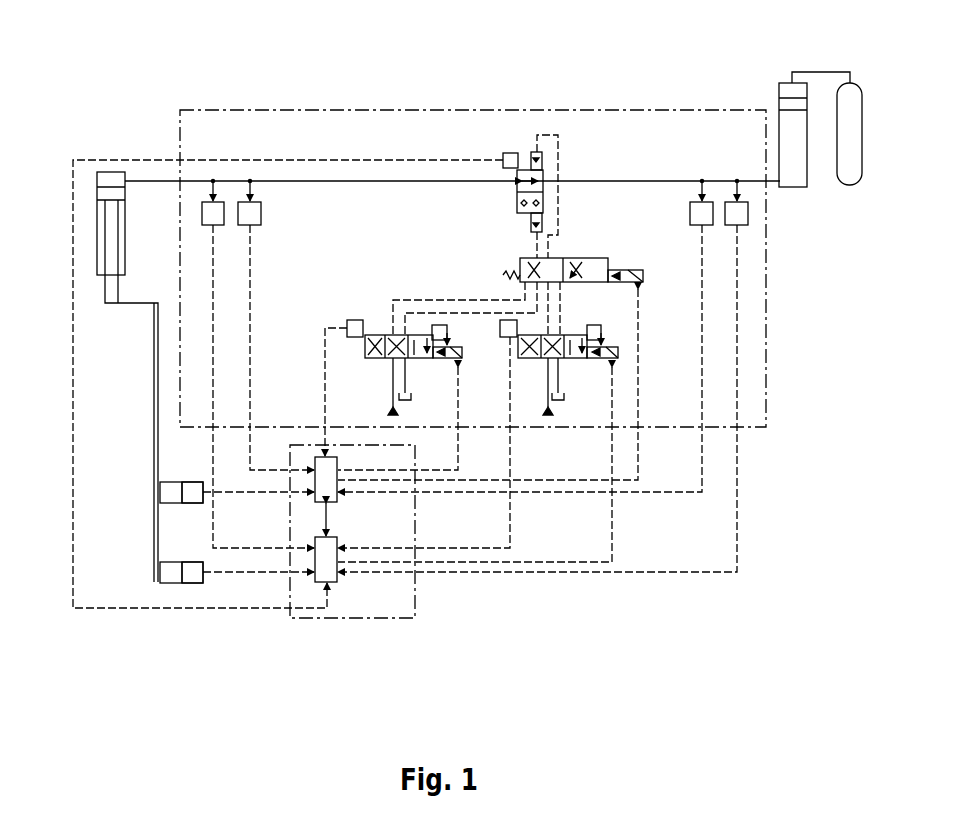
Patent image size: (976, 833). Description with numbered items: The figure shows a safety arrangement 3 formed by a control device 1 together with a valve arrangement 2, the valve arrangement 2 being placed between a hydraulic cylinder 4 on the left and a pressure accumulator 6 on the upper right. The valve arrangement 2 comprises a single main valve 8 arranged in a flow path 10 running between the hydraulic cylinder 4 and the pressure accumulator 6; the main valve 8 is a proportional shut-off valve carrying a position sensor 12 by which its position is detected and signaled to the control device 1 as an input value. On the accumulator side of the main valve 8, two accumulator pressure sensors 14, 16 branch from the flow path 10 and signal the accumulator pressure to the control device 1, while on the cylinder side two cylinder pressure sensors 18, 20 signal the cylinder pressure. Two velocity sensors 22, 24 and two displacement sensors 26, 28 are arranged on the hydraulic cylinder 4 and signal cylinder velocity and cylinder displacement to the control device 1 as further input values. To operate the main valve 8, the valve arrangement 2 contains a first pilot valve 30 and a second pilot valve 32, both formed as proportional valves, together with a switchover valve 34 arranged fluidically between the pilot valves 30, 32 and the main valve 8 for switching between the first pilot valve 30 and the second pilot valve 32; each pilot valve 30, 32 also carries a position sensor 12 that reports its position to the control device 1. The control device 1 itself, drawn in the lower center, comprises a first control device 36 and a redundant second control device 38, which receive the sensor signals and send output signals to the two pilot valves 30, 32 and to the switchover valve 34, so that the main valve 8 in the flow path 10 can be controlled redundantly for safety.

The control device 1 is at (419, 607).
The valve arrangement 2 is at (404, 107).
The safety arrangement 3 is at (573, 609).
The hydraulic cylinder 4 is at (97, 266).
The pressure accumulator 6 is at (785, 78).
The main valve 8 is at (519, 212).
The flow path 10 is at (291, 182).
The position sensor 12 is at (503, 158).
The accumulator pressure sensor 14 is at (711, 226).
The accumulator pressure sensor 16 is at (746, 226).
The cylinder pressure sensor 18 is at (206, 226).
The cylinder pressure sensor 20 is at (241, 226).
The velocity sensor 22 is at (170, 482).
The velocity sensor 24 is at (169, 562).
The displacement sensor 26 is at (193, 504).
The displacement sensor 28 is at (196, 584).
The first pilot valve 30 is at (365, 350).
The second pilot valve 32 is at (519, 350).
The switchover valve 34 is at (597, 258).
The first control device 36 is at (337, 500).
The second control device 38 is at (337, 580).